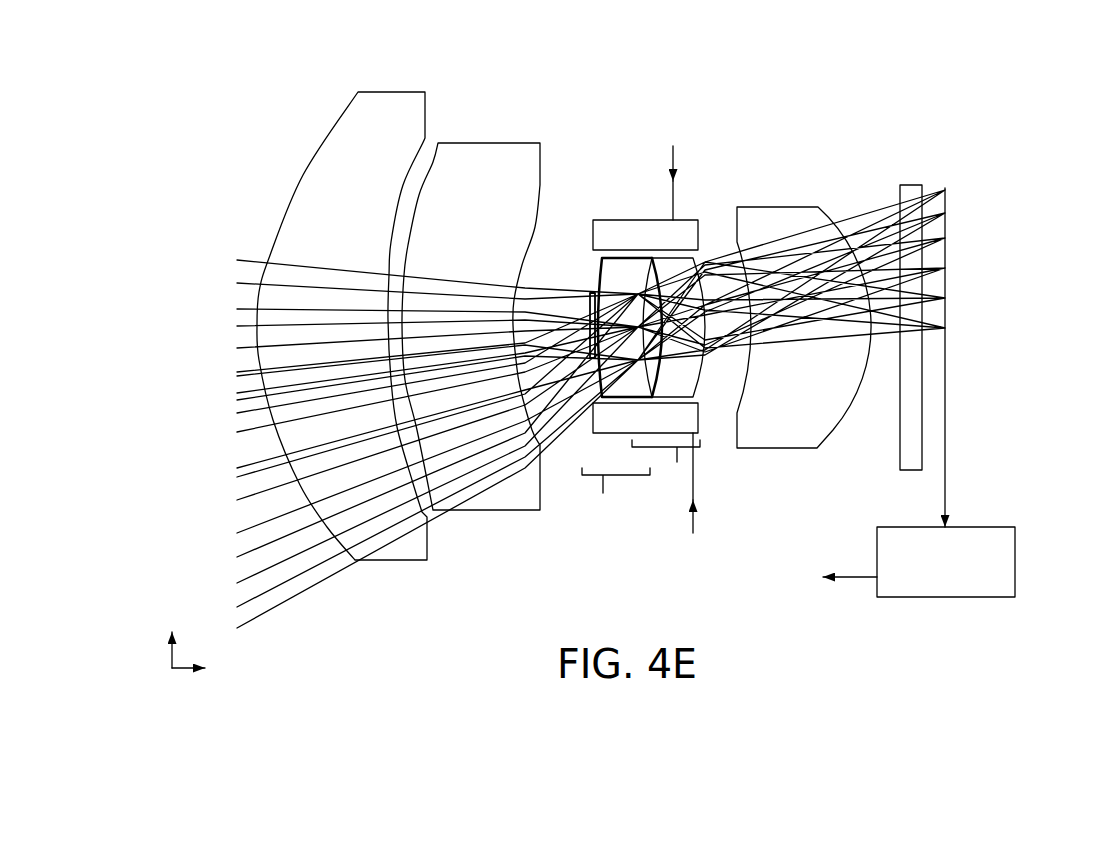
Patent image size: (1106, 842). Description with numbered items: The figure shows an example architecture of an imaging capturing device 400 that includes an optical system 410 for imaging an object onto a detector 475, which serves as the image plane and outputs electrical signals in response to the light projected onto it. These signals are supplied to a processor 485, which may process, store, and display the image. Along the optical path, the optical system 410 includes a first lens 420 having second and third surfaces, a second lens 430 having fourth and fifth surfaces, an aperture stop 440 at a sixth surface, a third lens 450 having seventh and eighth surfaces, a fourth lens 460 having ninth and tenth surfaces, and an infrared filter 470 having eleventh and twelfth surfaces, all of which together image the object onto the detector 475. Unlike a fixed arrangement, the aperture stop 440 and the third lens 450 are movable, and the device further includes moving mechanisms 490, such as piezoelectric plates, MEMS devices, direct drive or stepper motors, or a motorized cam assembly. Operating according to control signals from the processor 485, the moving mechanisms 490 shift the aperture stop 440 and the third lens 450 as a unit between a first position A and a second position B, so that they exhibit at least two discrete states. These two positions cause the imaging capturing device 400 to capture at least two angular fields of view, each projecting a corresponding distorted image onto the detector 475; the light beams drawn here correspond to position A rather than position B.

The imaging capturing device 400 is at (857, 82).
The optical system 410 is at (573, 102).
The first lens 420 is at (320, 204).
The second lens 430 is at (451, 231).
The aperture stop 440 is at (588, 297).
The third lens 450 is at (600, 283).
The fourth lens 460 is at (757, 422).
The infrared filter 470 is at (898, 430).
The detector 475 is at (948, 332).
The processor 485 is at (1017, 563).
The moving mechanisms 490 is at (649, 341).